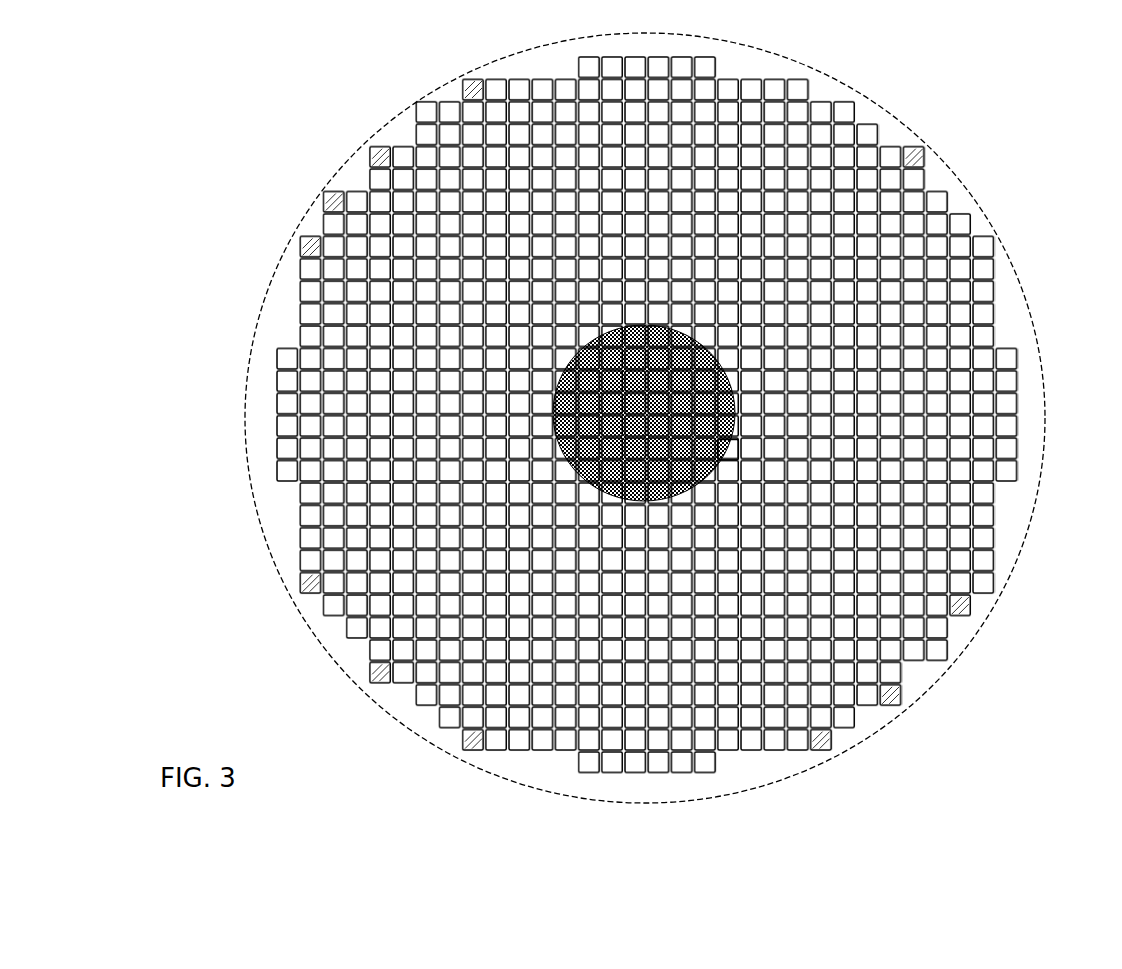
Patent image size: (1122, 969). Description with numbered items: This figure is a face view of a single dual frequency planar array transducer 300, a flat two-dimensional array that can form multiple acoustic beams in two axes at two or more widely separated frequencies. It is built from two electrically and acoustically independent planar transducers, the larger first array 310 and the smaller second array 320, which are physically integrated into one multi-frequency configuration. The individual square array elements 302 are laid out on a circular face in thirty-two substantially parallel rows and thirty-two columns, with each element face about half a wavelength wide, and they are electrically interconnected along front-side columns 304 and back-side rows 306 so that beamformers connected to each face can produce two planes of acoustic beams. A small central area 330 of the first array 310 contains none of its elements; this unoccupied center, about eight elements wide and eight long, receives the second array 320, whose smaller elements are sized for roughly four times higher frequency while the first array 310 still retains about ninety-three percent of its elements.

The planar array transducer 300 is at (890, 62).
The array elements 302 is at (985, 247).
The front-side columns 304 is at (969, 639).
The back-side rows 306 is at (274, 604).
The first array 310 is at (913, 160).
The second array 320 is at (724, 462).
The central area 330 is at (726, 362).